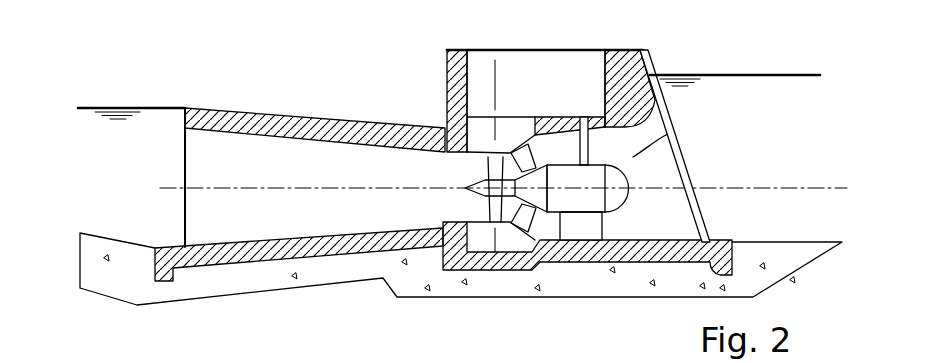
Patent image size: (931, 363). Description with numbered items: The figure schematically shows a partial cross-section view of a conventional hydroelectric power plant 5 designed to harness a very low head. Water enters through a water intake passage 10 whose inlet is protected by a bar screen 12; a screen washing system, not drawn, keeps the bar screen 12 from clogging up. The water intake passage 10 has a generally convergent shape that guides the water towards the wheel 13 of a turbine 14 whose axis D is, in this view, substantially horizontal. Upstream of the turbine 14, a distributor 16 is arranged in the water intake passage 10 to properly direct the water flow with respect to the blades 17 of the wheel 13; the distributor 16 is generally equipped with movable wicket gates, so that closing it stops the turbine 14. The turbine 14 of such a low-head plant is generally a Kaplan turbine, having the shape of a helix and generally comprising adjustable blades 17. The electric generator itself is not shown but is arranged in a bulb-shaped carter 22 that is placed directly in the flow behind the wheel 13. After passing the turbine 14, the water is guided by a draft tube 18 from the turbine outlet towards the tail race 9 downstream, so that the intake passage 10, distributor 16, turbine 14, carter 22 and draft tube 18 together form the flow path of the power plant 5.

The hydroelectric power plant 5 is at (582, 40).
The tail race 9 is at (113, 175).
The water intake passage 10 is at (663, 74).
The bar screen 12 is at (681, 148).
The wheel 13 is at (447, 240).
The turbine 14 is at (464, 187).
The distributor 16 is at (536, 216).
The blades 17 is at (491, 224).
The draft tube 18 is at (243, 163).
The bulb-shaped carter 22 is at (581, 198).
The axis D is at (701, 178).